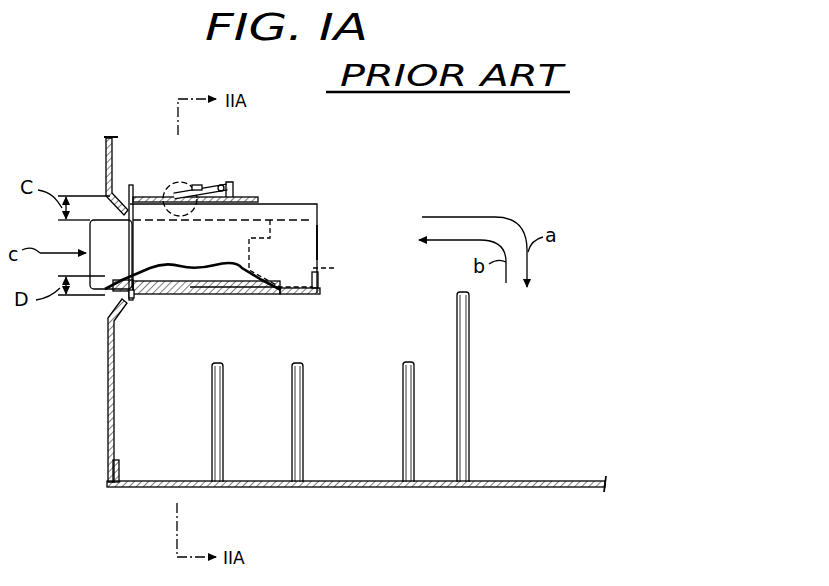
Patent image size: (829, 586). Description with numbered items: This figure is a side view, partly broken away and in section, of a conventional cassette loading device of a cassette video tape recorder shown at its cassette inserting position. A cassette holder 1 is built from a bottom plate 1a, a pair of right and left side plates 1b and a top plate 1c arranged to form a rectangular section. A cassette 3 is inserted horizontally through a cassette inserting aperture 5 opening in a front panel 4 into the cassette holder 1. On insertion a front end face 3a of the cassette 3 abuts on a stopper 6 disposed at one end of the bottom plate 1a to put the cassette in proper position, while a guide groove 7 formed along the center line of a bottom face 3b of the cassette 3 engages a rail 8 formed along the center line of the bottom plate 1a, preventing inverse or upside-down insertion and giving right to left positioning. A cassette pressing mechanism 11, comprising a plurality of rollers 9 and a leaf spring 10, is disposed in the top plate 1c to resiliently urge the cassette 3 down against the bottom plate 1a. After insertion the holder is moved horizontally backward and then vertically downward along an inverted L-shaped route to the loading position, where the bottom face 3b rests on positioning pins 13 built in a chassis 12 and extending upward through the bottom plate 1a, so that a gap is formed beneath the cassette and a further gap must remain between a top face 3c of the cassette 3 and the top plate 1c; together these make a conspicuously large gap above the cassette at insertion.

The cassette holder 1 is at (317, 191).
The bottom plate 1a is at (265, 291).
The side plate 1b is at (307, 243).
The top plate 1c is at (148, 195).
The cassette 3 is at (102, 264).
The front end face 3a is at (322, 268).
The bottom face 3b is at (118, 293).
The top face 3c is at (120, 220).
The front panel 4 is at (107, 350).
The cassette inserting aperture 5 is at (119, 300).
The stopper 6 is at (321, 288).
The guide groove 7 is at (218, 283).
The rail 8 is at (175, 290).
The roller 9 is at (173, 193).
The leaf spring 10 is at (196, 189).
The cassette pressing mechanism 11 is at (244, 186).
The chassis 12 is at (499, 489).
The positioning pin 13 is at (214, 404).